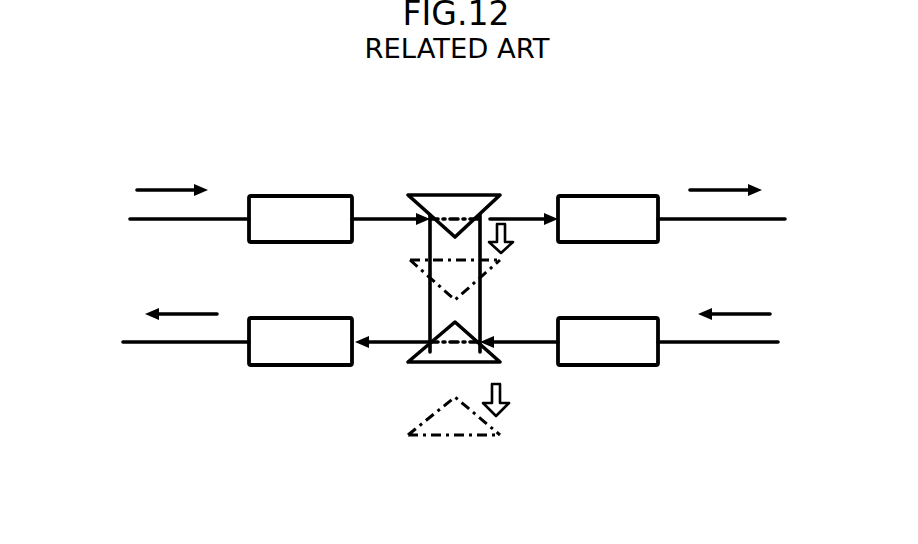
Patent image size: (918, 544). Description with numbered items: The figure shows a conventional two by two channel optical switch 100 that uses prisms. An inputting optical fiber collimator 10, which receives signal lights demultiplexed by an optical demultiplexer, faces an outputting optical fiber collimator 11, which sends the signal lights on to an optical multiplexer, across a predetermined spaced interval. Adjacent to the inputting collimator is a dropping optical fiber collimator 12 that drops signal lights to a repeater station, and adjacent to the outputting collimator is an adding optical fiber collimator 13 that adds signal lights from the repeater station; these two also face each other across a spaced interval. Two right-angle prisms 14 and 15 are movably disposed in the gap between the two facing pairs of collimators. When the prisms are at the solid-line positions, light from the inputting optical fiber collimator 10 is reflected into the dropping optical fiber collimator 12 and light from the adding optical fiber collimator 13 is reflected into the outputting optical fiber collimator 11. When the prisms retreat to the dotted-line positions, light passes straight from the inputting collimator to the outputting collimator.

The inputting optical fiber collimator 10 is at (305, 196).
The outputting optical fiber collimator 11 is at (611, 196).
The dropping optical fiber collimator 12 is at (300, 366).
The adding optical fiber collimator 13 is at (610, 366).
The right-angle prism 14 is at (455, 195).
The right-angle prism 15 is at (430, 366).
The optical switch 100 is at (655, 537).